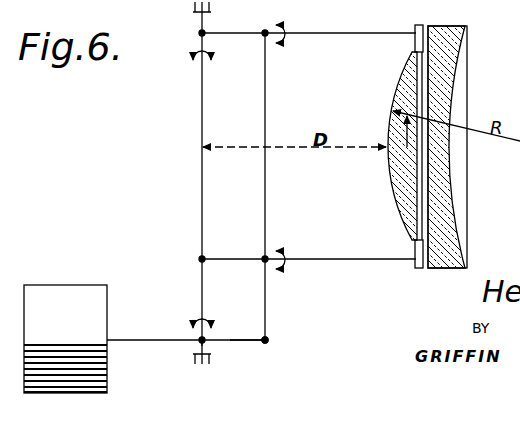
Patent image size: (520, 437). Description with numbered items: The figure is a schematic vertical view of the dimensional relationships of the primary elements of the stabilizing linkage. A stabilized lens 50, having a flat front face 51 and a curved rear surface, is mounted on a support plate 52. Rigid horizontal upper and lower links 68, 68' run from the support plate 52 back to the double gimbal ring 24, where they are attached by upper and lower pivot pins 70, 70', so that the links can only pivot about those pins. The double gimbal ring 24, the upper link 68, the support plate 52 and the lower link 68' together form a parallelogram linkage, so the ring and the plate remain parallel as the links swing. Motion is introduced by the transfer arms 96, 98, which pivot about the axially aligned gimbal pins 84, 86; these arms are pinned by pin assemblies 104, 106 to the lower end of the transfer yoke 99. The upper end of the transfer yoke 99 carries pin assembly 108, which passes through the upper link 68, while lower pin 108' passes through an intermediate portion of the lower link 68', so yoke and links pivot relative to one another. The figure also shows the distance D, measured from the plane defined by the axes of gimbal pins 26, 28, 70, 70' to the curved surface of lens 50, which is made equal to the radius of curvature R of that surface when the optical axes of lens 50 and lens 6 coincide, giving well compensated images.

The lens 6 is at (458, 48).
The double gimbal ring 24 is at (202, 115).
The gimbal pin 26 is at (204, 27).
The gimbal pin 28 is at (200, 348).
The stabilized lens 50 is at (398, 184).
The flat front face 51 is at (413, 240).
The support plate 52 is at (419, 25).
The upper link 68 is at (340, 21).
The lower link 68' is at (309, 277).
The upper pivot pin 70 is at (180, 32).
The lower pivot pin 70' is at (184, 292).
The gimbal pin 84 is at (156, 332).
The gimbal pin 86 is at (202, 340).
The transfer arm 96 is at (230, 341).
The transfer arm 98 is at (260, 366).
The transfer yoke 99 is at (267, 82).
The pin assembly 104 is at (265, 341).
The pin assembly 106 is at (309, 350).
The pin assembly 108 is at (289, 22).
The lower pin 108' is at (291, 242).